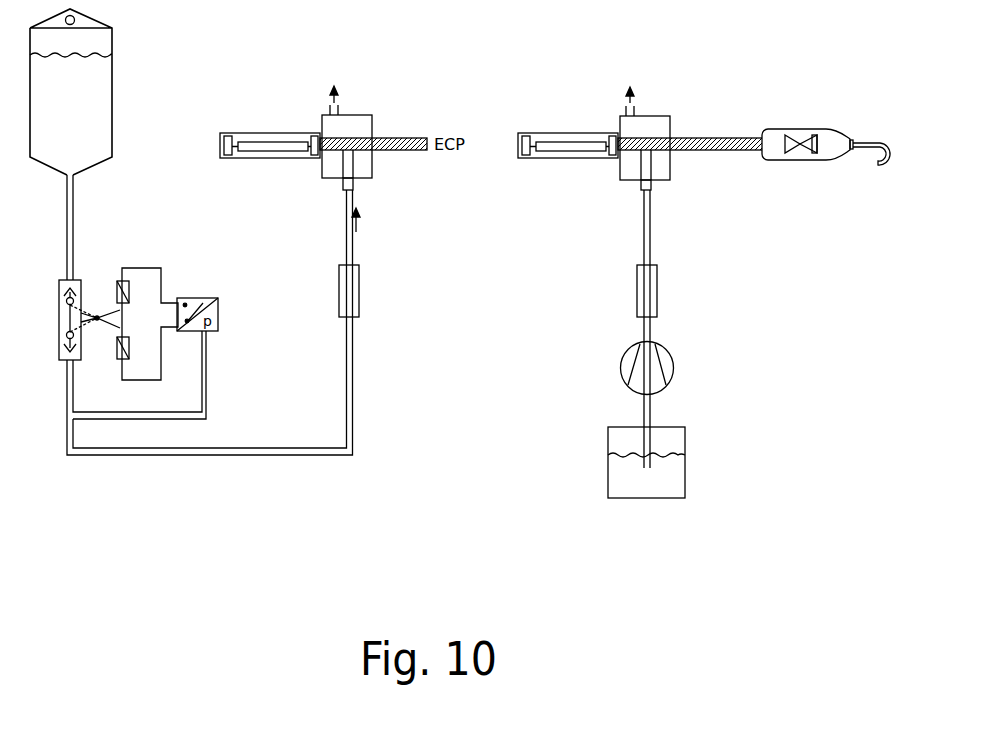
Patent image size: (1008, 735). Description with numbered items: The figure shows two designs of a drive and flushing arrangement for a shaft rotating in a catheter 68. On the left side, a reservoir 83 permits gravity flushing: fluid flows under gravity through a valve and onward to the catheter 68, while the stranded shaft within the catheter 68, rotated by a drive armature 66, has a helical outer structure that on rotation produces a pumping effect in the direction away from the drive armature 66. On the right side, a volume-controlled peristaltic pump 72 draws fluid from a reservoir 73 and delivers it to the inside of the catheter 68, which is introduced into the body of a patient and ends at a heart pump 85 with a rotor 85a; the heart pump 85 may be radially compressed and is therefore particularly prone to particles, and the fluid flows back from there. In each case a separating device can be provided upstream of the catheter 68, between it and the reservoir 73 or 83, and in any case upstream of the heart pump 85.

The reservoir 83 is at (93, 92).
The drive armature 66 is at (263, 145).
The catheter 68 is at (400, 153).
The peristaltic pump 72 is at (675, 368).
The reservoir 73 is at (678, 472).
The heart pump 85 is at (826, 146).
The rotor 85a is at (812, 140).